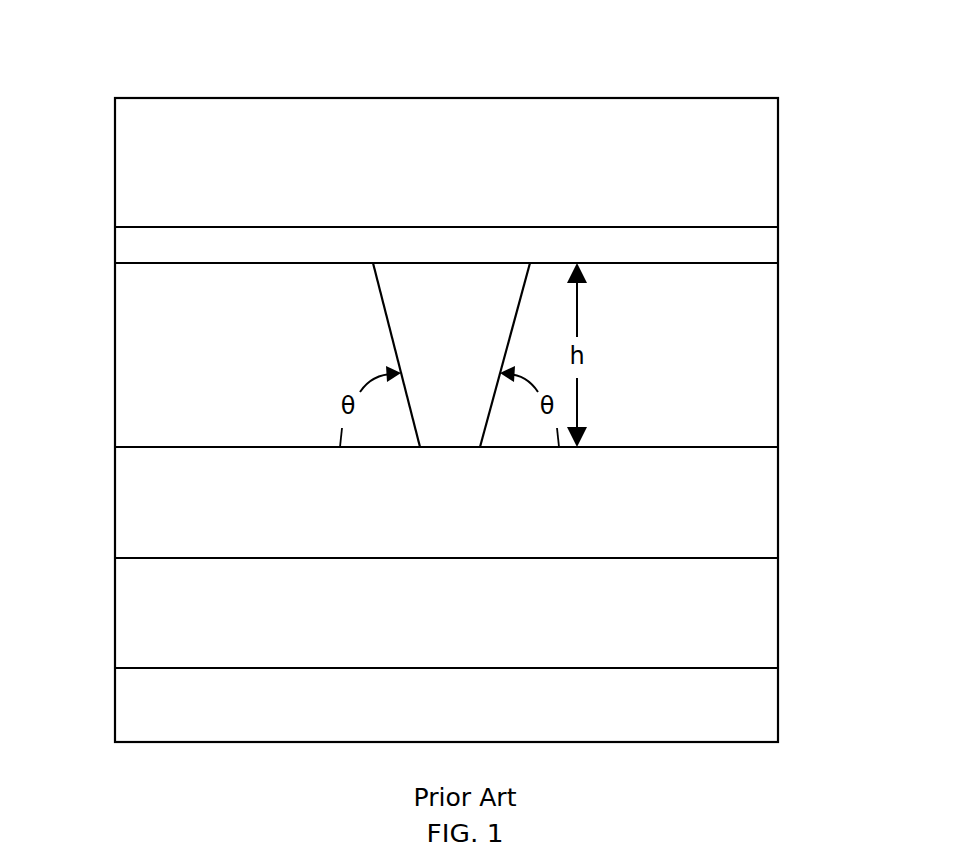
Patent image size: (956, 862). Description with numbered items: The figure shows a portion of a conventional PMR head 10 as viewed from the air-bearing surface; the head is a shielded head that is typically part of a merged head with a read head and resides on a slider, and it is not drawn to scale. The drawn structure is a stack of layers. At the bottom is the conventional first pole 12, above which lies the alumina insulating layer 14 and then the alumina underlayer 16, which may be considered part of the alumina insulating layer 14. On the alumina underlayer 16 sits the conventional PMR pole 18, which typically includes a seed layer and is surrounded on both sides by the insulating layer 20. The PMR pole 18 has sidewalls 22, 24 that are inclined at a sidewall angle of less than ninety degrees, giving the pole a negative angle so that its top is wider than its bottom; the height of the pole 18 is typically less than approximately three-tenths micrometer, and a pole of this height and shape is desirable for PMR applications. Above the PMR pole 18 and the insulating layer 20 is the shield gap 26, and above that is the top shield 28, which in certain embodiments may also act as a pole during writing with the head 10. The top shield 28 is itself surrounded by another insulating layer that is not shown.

The conventional PMR head 10 is at (482, 35).
The first pole 12 is at (778, 707).
The alumina insulating layer 14 is at (115, 648).
The alumina underlayer 16 is at (778, 487).
The PMR pole 18 is at (408, 263).
The insulating layer 20 is at (778, 355).
The sidewall 22 is at (487, 418).
The sidewall 24 is at (410, 418).
The shield gap 26 is at (135, 226).
The top shield 28 is at (465, 98).